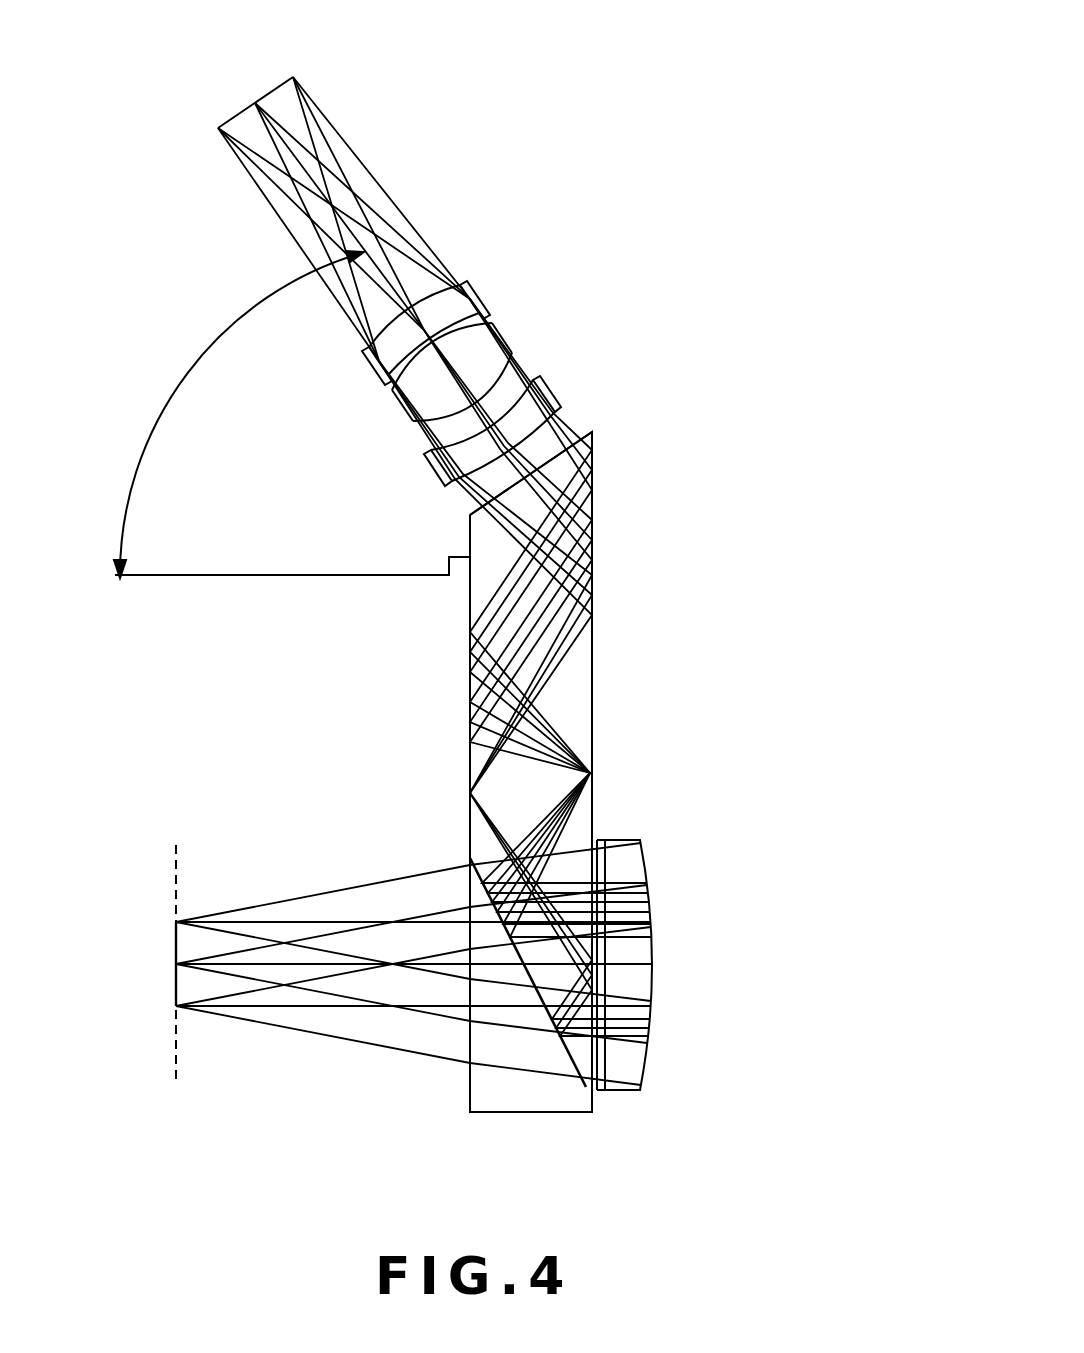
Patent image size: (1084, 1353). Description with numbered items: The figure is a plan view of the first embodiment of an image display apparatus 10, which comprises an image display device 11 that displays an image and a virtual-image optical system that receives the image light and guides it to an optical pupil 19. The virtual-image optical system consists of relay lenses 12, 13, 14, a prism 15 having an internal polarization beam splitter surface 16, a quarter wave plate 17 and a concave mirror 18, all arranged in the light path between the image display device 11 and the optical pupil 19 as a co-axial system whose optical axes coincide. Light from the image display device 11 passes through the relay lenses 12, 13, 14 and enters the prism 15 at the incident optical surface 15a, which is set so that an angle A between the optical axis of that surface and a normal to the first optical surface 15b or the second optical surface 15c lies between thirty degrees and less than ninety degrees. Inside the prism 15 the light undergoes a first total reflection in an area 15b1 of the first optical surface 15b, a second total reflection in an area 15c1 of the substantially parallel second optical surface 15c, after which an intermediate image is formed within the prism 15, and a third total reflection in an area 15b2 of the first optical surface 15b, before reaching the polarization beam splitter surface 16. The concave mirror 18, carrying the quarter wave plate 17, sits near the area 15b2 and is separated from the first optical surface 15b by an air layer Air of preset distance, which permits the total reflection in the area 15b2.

The image display apparatus 10 is at (483, 120).
The image display device 11 is at (259, 97).
The relay lens 12 is at (441, 297).
The relay lens 13 is at (471, 328).
The relay lens 14 is at (513, 380).
The prism 15 is at (625, 472).
The incident optical surface 15a is at (591, 436).
The first optical surface 15b is at (596, 676).
The area of the first optical surface 15b1 is at (596, 504).
The area of the first optical surface 15b2 is at (608, 860).
The second optical surface 15c is at (468, 746).
The area of the second optical surface 15c1 is at (468, 641).
The polarization beam splitter surface 16 is at (541, 1035).
The quarter wave plate 17 is at (600, 1094).
The concave mirror 18 is at (626, 950).
The optical pupil 19 is at (184, 842).
The angle A is at (292, 414).
The air layer Air is at (590, 1093).